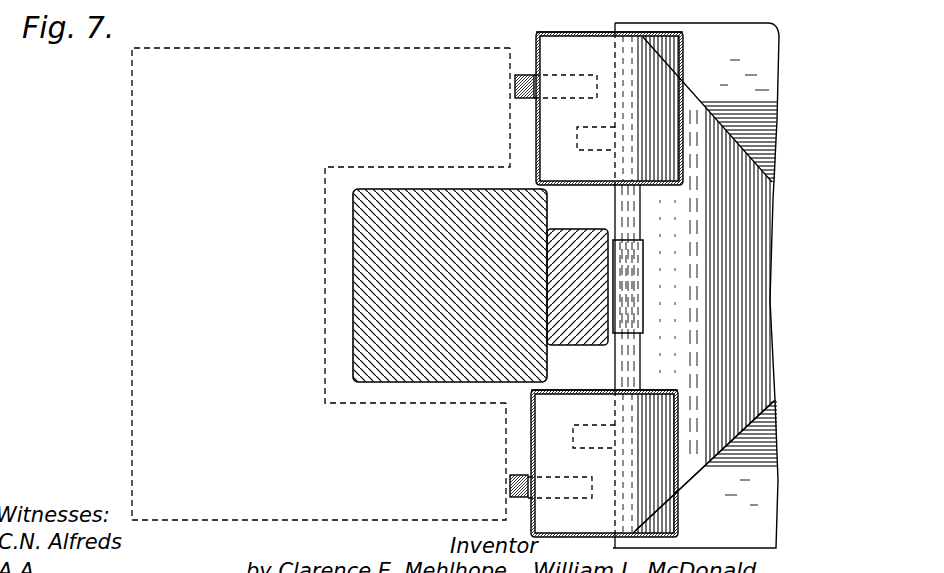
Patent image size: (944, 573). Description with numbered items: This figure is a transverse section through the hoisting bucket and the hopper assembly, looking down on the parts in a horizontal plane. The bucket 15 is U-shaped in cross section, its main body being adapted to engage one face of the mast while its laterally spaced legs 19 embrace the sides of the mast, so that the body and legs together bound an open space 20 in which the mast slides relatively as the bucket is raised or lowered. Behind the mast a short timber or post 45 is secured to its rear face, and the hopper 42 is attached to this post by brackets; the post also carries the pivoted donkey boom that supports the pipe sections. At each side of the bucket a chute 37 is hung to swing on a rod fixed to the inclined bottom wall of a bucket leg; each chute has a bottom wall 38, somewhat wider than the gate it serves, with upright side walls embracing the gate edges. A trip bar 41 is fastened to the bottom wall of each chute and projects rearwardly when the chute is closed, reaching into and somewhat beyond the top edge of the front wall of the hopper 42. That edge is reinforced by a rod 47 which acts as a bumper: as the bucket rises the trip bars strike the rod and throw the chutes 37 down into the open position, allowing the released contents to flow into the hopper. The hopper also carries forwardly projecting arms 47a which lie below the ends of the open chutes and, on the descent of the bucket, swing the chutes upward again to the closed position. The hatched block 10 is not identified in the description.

The core block 10 is at (365, 370).
The bucket 15 is at (218, 44).
The leg 19 is at (481, 20).
The open space 20 is at (417, 225).
The chute 37 is at (631, 29).
The bottom wall 38 is at (607, 284).
The trip bar 41 is at (515, 83).
The hopper 42 is at (761, 19).
The short post 45 is at (578, 224).
The rod 47 is at (641, 352).
The forwardly projecting arm 47a is at (582, 127).